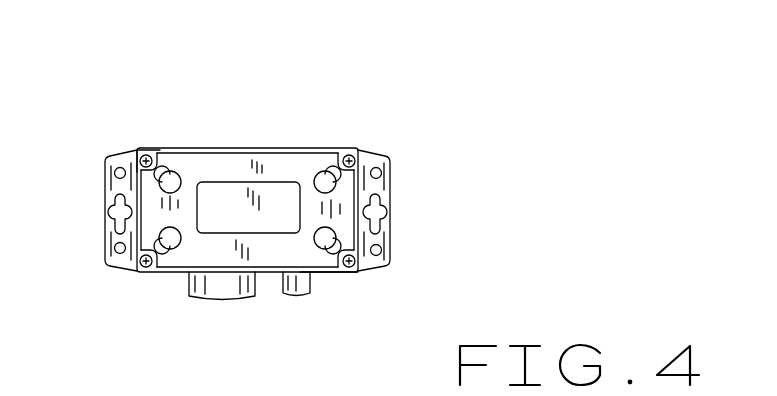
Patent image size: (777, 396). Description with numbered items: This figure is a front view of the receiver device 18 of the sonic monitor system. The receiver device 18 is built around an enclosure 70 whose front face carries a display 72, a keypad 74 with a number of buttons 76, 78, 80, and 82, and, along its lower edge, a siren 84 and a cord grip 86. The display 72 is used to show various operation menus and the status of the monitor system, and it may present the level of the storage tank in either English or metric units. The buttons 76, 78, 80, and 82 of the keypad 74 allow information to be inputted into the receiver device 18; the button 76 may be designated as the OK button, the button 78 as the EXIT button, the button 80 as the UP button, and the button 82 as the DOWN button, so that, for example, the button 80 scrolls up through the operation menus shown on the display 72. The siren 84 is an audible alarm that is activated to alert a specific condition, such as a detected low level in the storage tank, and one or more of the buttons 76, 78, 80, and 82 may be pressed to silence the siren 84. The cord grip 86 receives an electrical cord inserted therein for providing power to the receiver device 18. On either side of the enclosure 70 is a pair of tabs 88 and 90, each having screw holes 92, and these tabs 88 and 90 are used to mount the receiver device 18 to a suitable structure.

The receiver device 18 is at (262, 118).
The enclosure 70 is at (168, 178).
The display 72 is at (238, 195).
The keypad 74 is at (328, 266).
The button 76 is at (140, 150).
The button 78 is at (168, 245).
The button 80 is at (323, 177).
The button 82 is at (353, 270).
The siren 84 is at (235, 300).
The cord grip 86 is at (293, 297).
The tab 88 is at (107, 192).
The tab 90 is at (390, 182).
The screw holes 92 is at (120, 212).